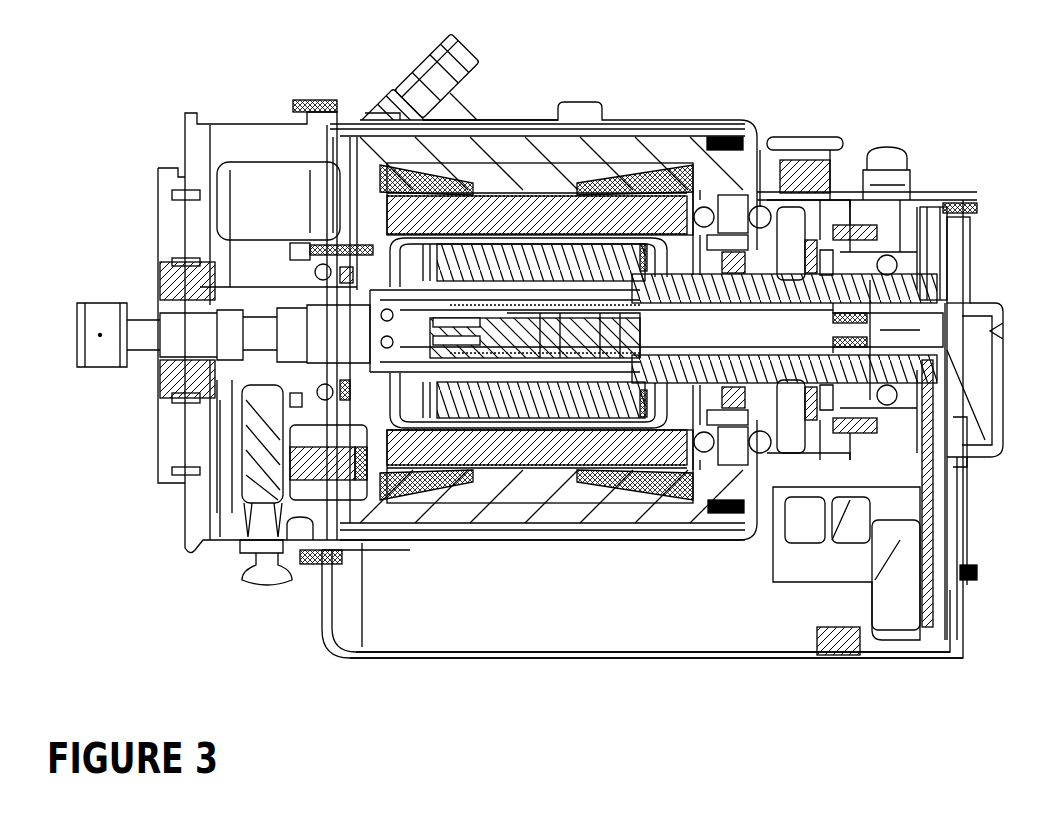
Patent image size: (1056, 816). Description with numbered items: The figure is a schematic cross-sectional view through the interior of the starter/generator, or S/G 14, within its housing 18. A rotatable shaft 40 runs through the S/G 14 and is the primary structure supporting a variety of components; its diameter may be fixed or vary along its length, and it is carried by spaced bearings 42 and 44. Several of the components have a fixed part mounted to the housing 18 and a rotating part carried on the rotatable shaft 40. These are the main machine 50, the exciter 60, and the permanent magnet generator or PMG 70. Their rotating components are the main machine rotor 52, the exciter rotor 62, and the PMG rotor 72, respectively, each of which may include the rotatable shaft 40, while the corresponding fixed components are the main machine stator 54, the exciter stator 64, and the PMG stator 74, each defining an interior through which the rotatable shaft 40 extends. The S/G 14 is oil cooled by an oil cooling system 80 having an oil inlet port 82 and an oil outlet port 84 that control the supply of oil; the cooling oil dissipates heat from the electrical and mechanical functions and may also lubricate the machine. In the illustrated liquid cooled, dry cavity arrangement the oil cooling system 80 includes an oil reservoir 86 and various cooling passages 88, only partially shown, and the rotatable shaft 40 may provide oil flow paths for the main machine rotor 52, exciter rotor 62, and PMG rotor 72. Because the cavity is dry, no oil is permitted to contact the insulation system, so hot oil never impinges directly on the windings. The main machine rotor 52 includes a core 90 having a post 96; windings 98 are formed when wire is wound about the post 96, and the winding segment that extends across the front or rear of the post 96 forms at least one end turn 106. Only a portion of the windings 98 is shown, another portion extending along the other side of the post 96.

The S/G 14 is at (528, 100).
The housing 18 is at (714, 200).
The rotatable shaft 40 is at (377, 362).
The bearing 42 is at (930, 268).
The bearing 44 is at (270, 387).
The main machine 50 is at (635, 110).
The main machine rotor 52 is at (510, 263).
The main machine stator 54 is at (560, 175).
The exciter 60 is at (735, 215).
The exciter rotor 62 is at (817, 217).
The exciter stator 64 is at (740, 250).
The PMG 70 is at (820, 247).
The PMG rotor 72 is at (880, 235).
The PMG stator 74 is at (877, 230).
The oil cooling system 80 is at (782, 645).
The oil inlet port 82 is at (447, 36).
The oil outlet port 84 is at (900, 157).
The oil reservoir 86 is at (653, 597).
The cooling passages 88 is at (658, 233).
The core 90 is at (542, 190).
The post 96 is at (607, 197).
The windings 98 is at (587, 212).
The end turn 106 is at (362, 138).